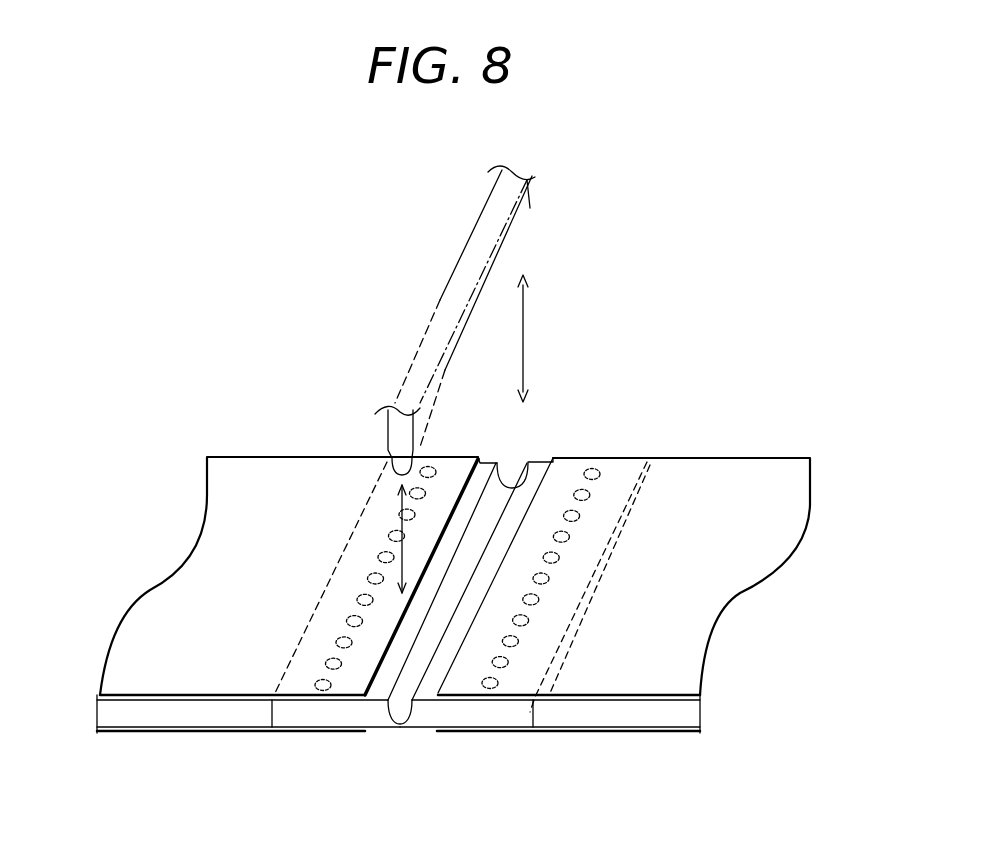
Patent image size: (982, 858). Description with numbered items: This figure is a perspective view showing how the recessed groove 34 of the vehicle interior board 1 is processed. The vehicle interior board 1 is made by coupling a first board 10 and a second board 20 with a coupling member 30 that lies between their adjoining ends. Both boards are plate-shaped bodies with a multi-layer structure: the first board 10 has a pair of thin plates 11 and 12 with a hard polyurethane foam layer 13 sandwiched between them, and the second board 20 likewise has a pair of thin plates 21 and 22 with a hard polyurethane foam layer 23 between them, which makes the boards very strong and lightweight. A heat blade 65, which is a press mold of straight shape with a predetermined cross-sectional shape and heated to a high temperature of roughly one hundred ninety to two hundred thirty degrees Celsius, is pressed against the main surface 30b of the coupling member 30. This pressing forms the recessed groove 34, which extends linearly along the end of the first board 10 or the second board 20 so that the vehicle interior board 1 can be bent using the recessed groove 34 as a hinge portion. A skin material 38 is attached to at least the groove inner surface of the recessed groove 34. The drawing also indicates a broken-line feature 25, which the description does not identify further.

The vehicle interior board 1 is at (748, 323).
The first board 10 is at (787, 435).
The thin plate 11 is at (650, 733).
The thin plate 12 is at (665, 675).
The hard polyurethane foam layer 13 is at (678, 713).
The second board 20 is at (182, 432).
The thin plate 21 is at (188, 733).
The thin plate 22 is at (162, 643).
The hard polyurethane foam layer 23 is at (120, 711).
The cutting line 25 is at (580, 545).
The coupling member 30 is at (432, 745).
The main surface 30b is at (393, 663).
The recessed groove 34 is at (400, 707).
The skin material 38 is at (510, 480).
The heat blade 65 is at (385, 442).